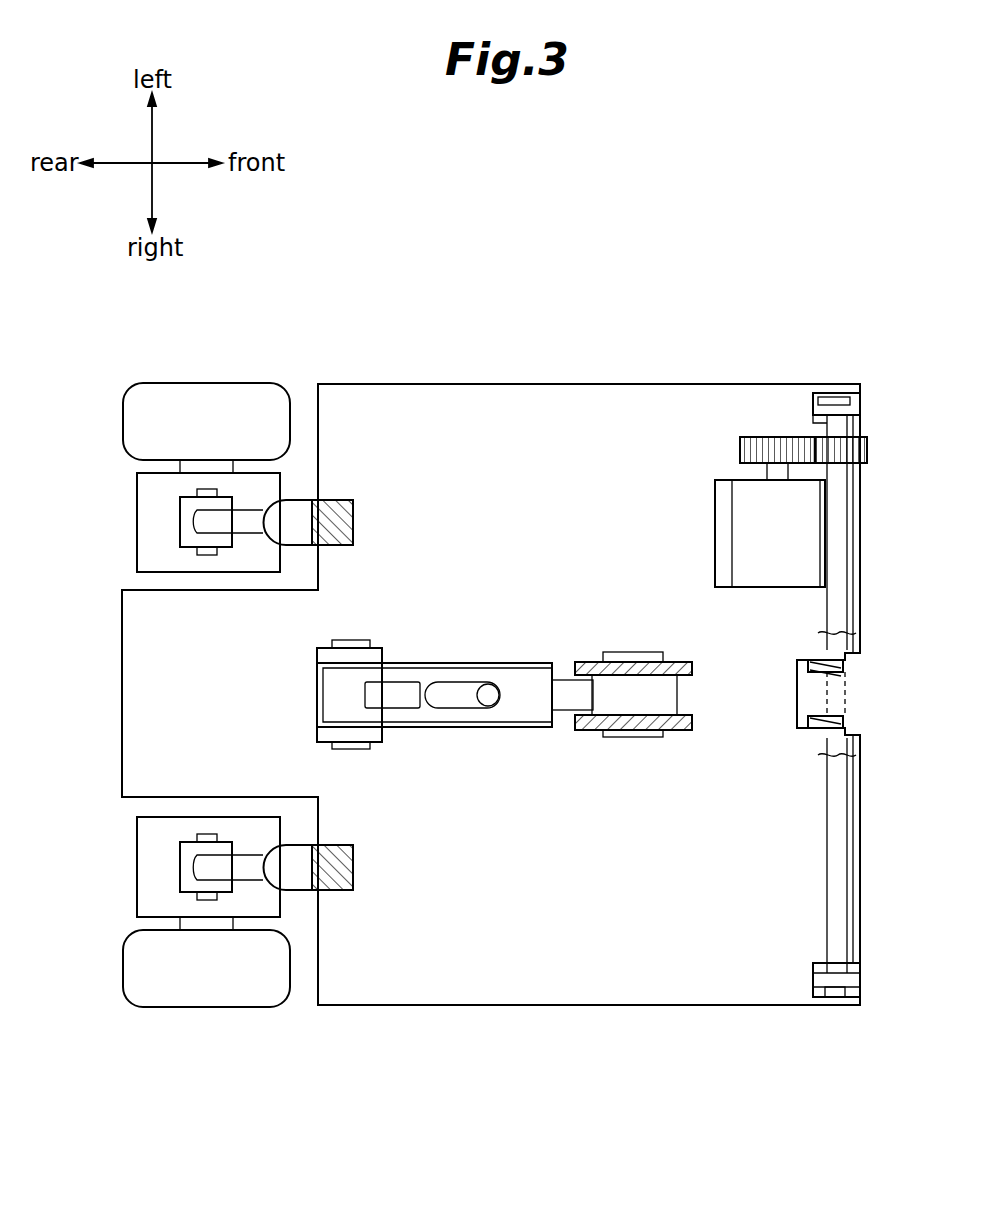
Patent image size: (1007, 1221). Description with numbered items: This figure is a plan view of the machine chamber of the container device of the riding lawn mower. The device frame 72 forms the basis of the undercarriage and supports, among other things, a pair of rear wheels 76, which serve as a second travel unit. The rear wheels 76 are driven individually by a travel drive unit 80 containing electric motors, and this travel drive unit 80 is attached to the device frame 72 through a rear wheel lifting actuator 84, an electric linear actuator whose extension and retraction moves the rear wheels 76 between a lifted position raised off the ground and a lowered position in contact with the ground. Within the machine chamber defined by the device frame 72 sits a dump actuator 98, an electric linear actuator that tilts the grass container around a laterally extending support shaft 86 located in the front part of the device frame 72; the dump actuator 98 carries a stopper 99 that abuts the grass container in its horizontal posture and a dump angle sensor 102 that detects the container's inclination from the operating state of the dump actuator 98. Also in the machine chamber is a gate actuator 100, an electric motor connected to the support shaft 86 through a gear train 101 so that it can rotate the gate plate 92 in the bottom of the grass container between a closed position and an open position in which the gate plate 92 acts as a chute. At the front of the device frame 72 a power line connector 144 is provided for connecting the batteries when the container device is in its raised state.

The device frame 72 is at (565, 398).
The rear wheels 76 is at (240, 394).
The travel drive unit 80 is at (140, 521).
The rear wheel lifting actuator 84 is at (292, 535).
The support shaft 86 is at (838, 494).
The gate plate 92 is at (855, 563).
The dump actuator 98 is at (455, 688).
The stopper 99 is at (460, 688).
The gate actuator 100 is at (745, 534).
The gear train 101 is at (835, 437).
The dump angle sensor 102 is at (400, 708).
The power line connector 144 is at (832, 716).